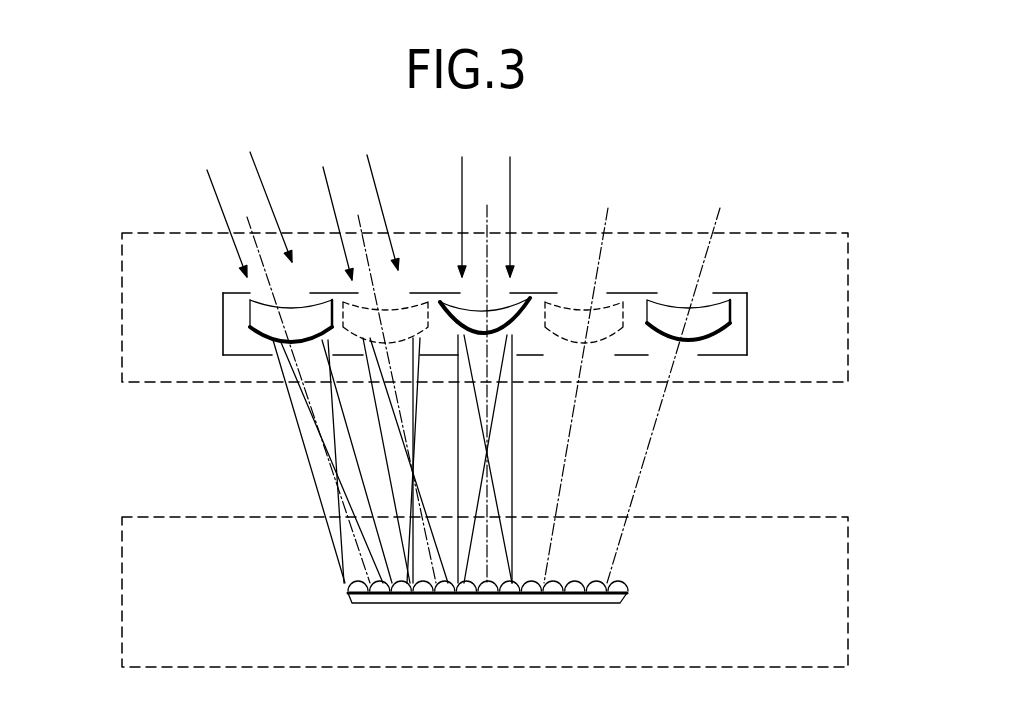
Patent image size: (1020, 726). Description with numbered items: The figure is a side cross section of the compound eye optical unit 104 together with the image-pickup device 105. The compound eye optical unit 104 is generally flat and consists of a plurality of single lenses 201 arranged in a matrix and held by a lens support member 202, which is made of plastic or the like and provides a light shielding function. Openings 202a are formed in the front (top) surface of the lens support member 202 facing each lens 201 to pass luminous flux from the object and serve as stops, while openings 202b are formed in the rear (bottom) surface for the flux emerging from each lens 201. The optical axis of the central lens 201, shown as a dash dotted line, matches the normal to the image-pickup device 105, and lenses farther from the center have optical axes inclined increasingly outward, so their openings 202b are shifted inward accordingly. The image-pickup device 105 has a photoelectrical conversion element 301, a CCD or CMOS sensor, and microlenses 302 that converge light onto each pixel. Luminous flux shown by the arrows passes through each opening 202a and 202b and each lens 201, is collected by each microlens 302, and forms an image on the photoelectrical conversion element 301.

The compound eye optical unit 104 is at (848, 233).
The image-pickup device 105 is at (848, 517).
The single lens 201 is at (252, 322).
The lens support member 202 is at (380, 351).
The opening 202a is at (267, 291).
The opening 202b is at (313, 352).
The photoelectrical conversion element 301 is at (352, 604).
The microlens 302 is at (349, 583).